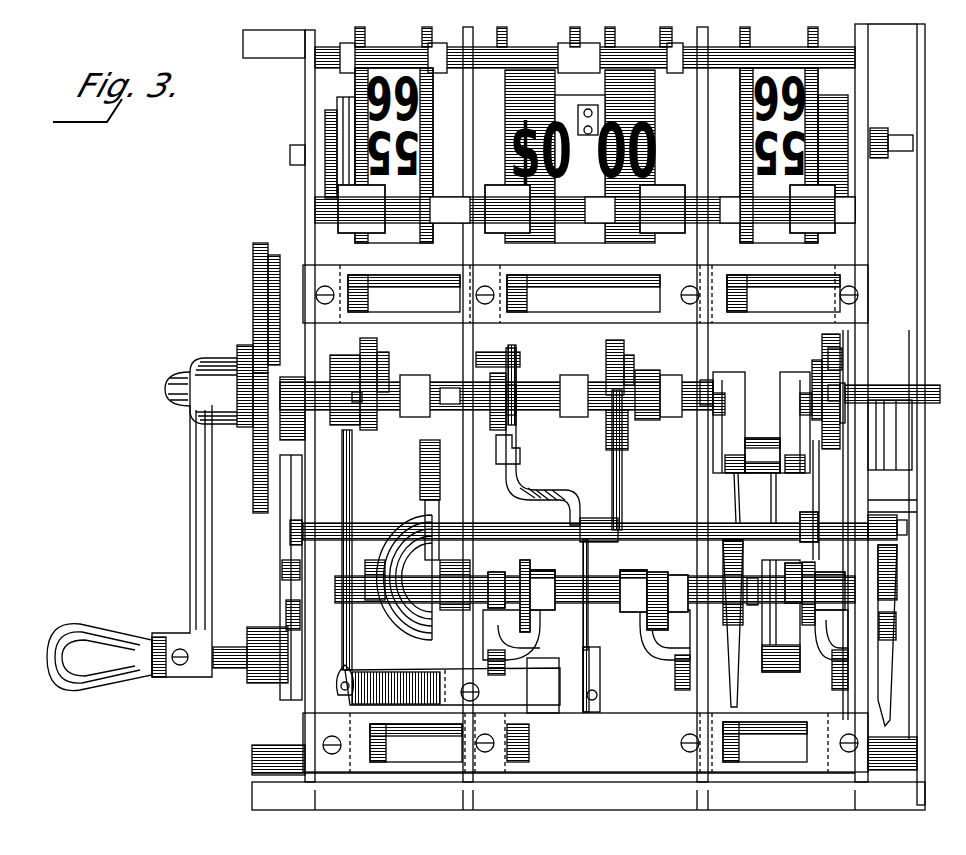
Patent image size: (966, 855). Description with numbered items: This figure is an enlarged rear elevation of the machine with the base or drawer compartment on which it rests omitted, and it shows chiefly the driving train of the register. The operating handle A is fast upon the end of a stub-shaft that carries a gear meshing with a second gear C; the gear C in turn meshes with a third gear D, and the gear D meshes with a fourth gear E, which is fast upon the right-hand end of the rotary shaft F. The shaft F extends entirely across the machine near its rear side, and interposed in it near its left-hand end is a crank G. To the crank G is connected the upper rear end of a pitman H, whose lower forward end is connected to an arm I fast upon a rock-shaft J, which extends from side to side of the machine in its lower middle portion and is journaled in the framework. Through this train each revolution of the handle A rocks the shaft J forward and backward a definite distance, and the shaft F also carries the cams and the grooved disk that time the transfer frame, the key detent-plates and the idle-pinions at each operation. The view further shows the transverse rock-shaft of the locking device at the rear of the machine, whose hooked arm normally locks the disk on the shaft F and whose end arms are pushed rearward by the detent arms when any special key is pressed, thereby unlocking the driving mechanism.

The rotary handle A is at (190, 500).
The second gear C is at (253, 490).
The third gear D is at (252, 264).
The fourth gear E is at (252, 350).
The rotary shaft F is at (645, 412).
The crank G is at (790, 410).
The pitman H is at (771, 493).
The arm I is at (762, 641).
The rock-shaft J is at (603, 592).